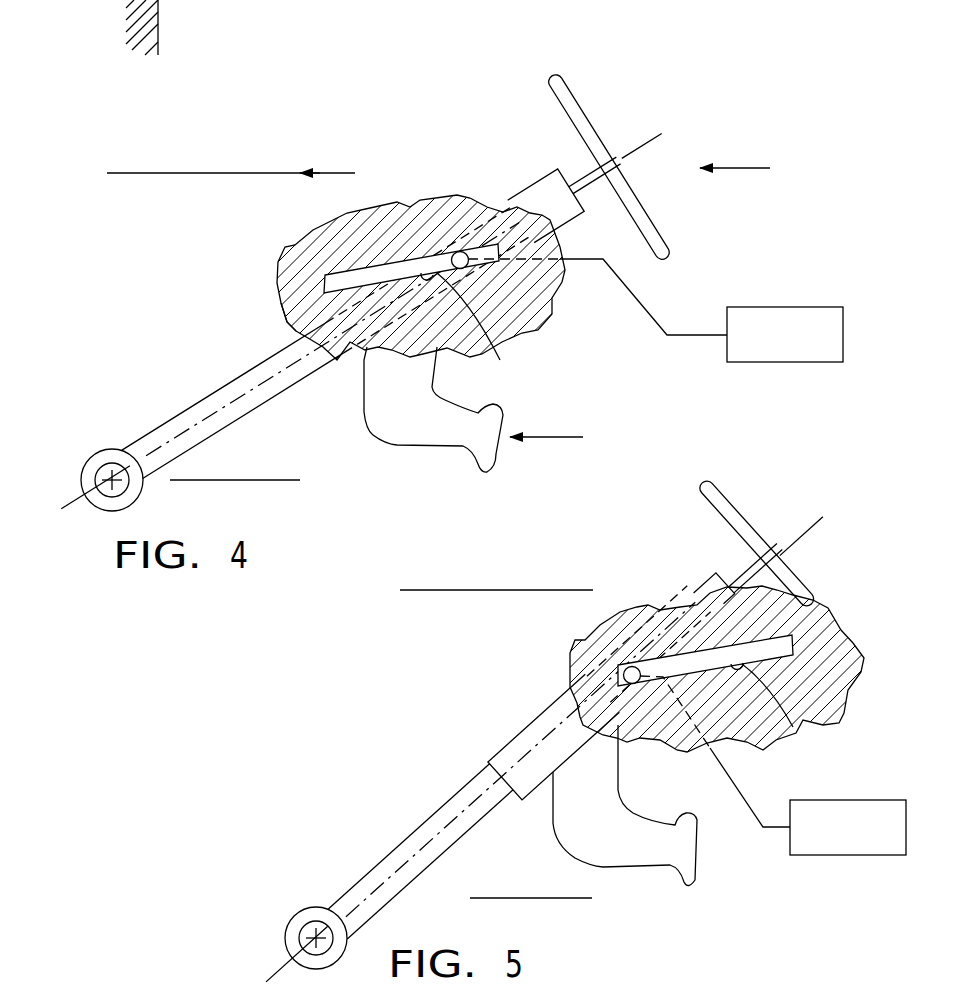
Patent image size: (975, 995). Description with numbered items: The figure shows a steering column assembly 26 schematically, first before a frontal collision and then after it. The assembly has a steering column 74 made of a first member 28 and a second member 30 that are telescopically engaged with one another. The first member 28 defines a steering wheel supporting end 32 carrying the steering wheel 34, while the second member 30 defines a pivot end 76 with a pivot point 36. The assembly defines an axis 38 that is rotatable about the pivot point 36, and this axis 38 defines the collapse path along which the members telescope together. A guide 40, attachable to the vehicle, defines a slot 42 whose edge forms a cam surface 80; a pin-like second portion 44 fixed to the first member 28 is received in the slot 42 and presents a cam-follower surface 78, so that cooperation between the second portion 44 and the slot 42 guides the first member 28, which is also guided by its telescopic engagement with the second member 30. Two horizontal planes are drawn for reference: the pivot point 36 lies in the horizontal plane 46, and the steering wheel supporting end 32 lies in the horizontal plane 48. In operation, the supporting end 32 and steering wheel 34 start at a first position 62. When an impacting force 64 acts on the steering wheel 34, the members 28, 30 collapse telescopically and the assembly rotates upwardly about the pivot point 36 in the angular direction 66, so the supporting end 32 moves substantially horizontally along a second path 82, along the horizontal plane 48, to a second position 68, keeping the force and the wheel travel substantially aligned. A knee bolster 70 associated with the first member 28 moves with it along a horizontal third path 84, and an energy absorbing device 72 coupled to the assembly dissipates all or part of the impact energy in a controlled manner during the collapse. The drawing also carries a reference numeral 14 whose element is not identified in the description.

In FIG. 4, the support structure 14 is at (208, 0).
In FIG. 4, the steering column assembly 26 is at (228, 132).
In FIG. 4, the first member 28 is at (518, 200).
In FIG. 5, the first member 28 is at (553, 737).
In FIG. 4, the second member 30 is at (155, 442).
In FIG. 5, the second member 30 is at (529, 753).
In FIG. 4, the steering wheel supporting end 32 is at (574, 176).
In FIG. 5, the steering wheel supporting end 32 is at (735, 578).
In FIG. 4, the steering wheel 34 is at (668, 235).
In FIG. 5, the steering wheel 34 is at (710, 487).
In FIG. 4, the pivot point 36 is at (97, 470).
In FIG. 5, the pivot point 36 is at (302, 928).
In FIG. 4, the axis 38 is at (660, 132).
In FIG. 5, the axis 38 is at (801, 536).
In FIG. 4, the guide 40 is at (562, 320).
In FIG. 5, the guide 40 is at (691, 669).
In FIG. 4, the slot 42 is at (503, 345).
In FIG. 5, the slot 42 is at (793, 725).
In FIG. 4, the second portion 44 is at (458, 252).
In FIG. 5, the second portion 44 is at (631, 667).
In FIG. 4, the horizontal plane 46 is at (258, 482).
In FIG. 5, the horizontal plane 46 is at (532, 900).
In FIG. 4, the horizontal plane 48 is at (150, 173).
In FIG. 5, the horizontal plane 48 is at (440, 590).
In FIG. 4, the first position 62 is at (605, 113).
In FIG. 4, the impacting force 64 is at (743, 168).
In FIG. 4, the angular direction 66 is at (254, 402).
In FIG. 5, the second position 68 is at (685, 522).
In FIG. 4, the knee bolster 70 is at (440, 442).
In FIG. 5, the knee bolster 70 is at (653, 848).
In FIG. 4, the energy absorbing (E/A) device 72 is at (800, 307).
In FIG. 5, the energy absorbing (E/A) device 72 is at (840, 800).
In FIG. 4, the steering column 74 is at (208, 263).
In FIG. 4, the pivot end 76 is at (80, 447).
In FIG. 4, the cam-follower surface 78 is at (437, 257).
In FIG. 5, the cam-follower surface 78 is at (705, 660).
In FIG. 4, the cam surface 80 is at (290, 320).
In FIG. 4, the second path 82 is at (342, 173).
In FIG. 4, the third path 84 is at (557, 437).